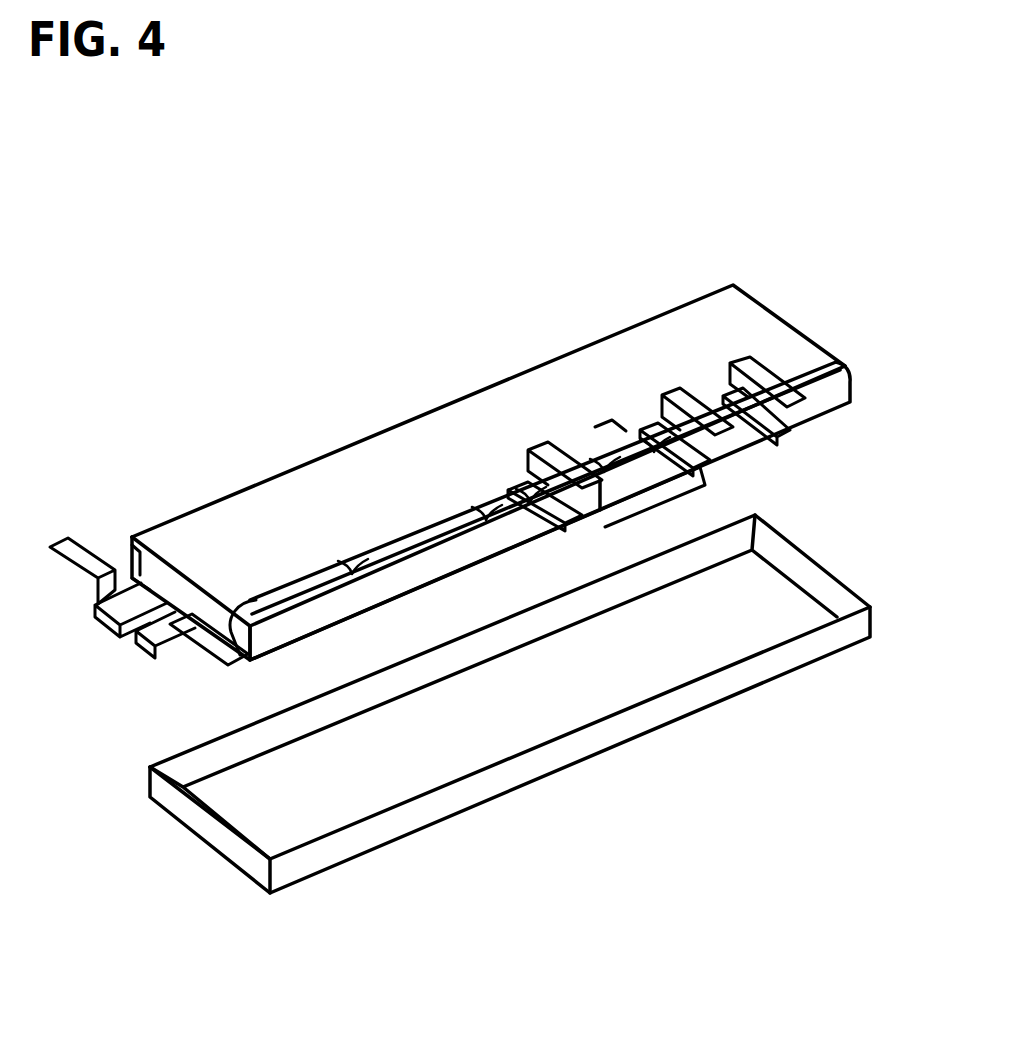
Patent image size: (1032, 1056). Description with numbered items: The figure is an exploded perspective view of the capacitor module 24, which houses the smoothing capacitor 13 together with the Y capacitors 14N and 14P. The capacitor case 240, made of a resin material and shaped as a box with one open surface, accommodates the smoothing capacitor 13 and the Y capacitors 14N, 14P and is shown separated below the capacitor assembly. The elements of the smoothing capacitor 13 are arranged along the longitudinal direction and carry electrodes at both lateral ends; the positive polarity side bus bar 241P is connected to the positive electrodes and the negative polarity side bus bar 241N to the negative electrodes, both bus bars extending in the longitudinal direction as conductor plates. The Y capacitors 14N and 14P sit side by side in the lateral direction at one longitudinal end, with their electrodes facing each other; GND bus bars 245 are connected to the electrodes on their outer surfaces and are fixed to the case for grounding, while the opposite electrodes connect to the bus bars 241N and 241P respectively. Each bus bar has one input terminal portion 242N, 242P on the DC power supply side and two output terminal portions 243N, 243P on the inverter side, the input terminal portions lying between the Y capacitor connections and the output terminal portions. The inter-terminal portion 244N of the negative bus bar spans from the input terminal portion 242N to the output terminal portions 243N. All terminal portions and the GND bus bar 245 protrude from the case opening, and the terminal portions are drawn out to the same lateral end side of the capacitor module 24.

The capacitor module 24 is at (819, 295).
The capacitor case 240 is at (873, 624).
The smoothing capacitor 13 is at (447, 540).
The negative polarity side bus bar 241N is at (138, 556).
The positive polarity side bus bar 241P is at (393, 582).
The input terminal portion 242N is at (607, 502).
The input terminal portion 242P is at (560, 527).
The output terminal portion 243N is at (733, 437).
The output terminal portion 243P is at (707, 473).
The inter-terminal portion 244N is at (603, 432).
The GND bus bar 245 is at (78, 548).
The Y capacitor 14N is at (96, 612).
The Y capacitor 14P is at (140, 642).